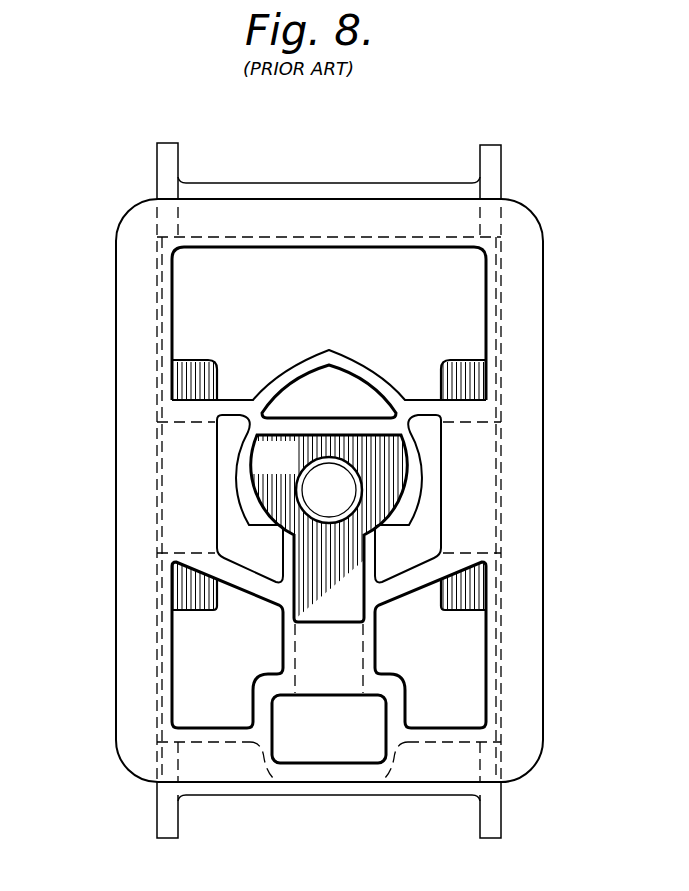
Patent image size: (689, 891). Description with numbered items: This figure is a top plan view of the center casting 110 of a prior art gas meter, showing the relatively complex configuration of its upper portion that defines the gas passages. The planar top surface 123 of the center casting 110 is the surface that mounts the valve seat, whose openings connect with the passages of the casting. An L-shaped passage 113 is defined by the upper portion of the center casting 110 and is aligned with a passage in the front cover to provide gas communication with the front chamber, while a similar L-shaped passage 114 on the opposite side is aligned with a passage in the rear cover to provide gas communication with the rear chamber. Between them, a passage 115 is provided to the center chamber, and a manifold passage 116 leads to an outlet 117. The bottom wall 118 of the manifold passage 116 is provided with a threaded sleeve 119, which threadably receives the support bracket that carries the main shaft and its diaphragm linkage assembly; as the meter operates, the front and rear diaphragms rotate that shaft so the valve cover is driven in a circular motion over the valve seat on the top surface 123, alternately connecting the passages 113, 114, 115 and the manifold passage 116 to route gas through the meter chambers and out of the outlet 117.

The center casting 110 is at (444, 170).
The top surface 123 is at (135, 443).
The L-shaped passage 113 is at (224, 516).
The L-shaped passage 114 is at (438, 497).
The passage 115 is at (360, 386).
The manifold passage 116 is at (296, 655).
The outlet 117 is at (313, 763).
The bottom wall 118 is at (292, 471).
The threaded sleeve 119 is at (357, 502).